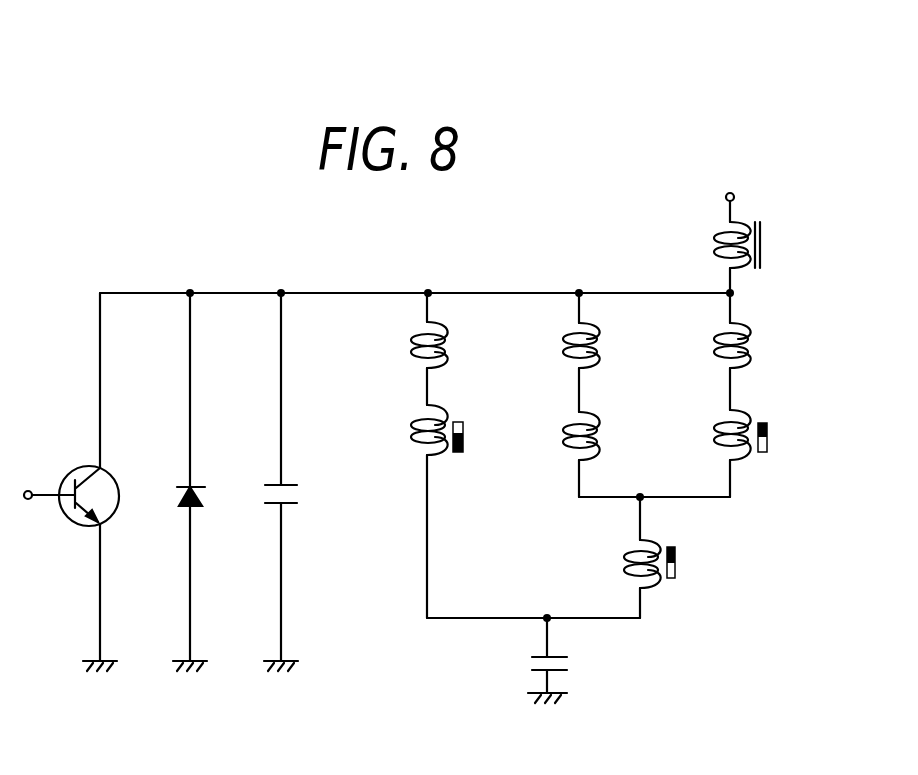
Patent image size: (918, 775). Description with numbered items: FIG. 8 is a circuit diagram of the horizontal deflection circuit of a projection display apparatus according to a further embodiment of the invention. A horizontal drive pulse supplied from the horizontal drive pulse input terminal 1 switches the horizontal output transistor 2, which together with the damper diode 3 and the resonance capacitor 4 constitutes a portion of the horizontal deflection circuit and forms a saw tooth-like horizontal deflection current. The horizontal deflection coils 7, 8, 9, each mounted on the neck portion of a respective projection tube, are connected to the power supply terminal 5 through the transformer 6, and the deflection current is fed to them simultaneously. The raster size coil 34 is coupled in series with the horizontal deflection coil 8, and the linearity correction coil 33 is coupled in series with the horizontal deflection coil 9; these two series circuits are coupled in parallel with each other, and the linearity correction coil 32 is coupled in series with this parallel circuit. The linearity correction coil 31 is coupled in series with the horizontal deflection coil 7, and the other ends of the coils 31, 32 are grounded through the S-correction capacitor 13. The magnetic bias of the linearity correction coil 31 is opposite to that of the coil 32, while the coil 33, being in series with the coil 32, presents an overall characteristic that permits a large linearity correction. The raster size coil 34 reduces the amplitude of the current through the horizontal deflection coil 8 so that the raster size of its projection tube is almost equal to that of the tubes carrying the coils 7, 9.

The horizontal drive pulse input terminal 1 is at (32, 485).
The horizontal output transistor 2 is at (105, 470).
The damper diode 3 is at (200, 485).
The resonance capacitor 4 is at (292, 484).
The power supply terminal 5 is at (726, 200).
The transformer 6 is at (766, 252).
The horizontal deflection coil 7 is at (405, 350).
The horizontal deflection coil 8 is at (554, 352).
The horizontal deflection coil 9 is at (707, 352).
The S-correction capacitor 13 is at (535, 657).
The linearity correction coil 31 is at (412, 446).
The linearity correction coil 32 is at (627, 553).
The linearity correction coil 33 is at (710, 441).
The raster size coil 34 is at (555, 441).